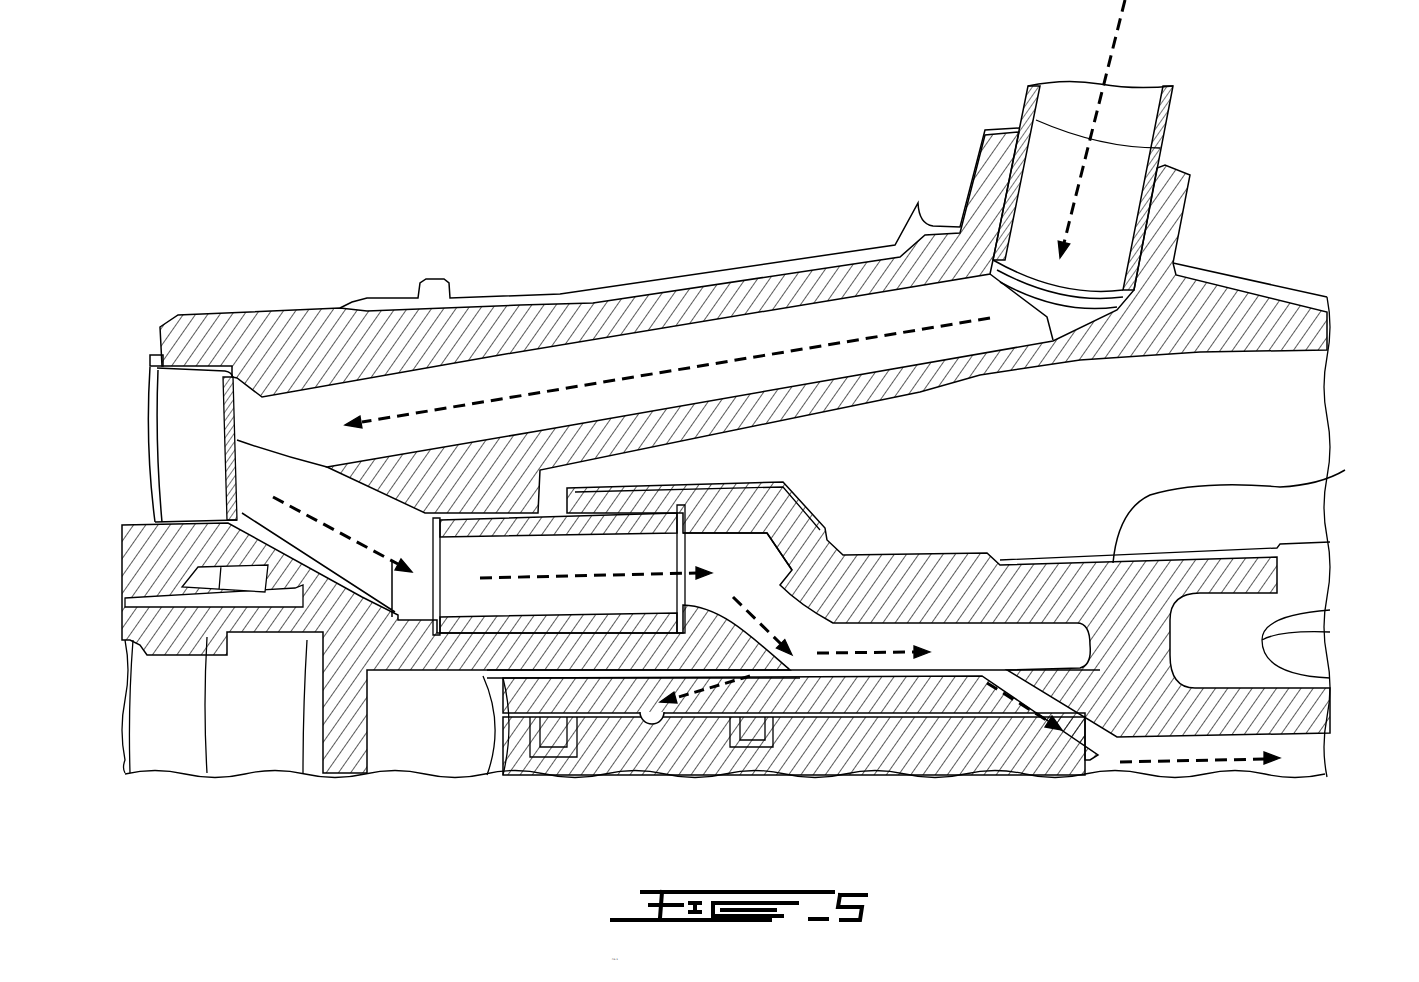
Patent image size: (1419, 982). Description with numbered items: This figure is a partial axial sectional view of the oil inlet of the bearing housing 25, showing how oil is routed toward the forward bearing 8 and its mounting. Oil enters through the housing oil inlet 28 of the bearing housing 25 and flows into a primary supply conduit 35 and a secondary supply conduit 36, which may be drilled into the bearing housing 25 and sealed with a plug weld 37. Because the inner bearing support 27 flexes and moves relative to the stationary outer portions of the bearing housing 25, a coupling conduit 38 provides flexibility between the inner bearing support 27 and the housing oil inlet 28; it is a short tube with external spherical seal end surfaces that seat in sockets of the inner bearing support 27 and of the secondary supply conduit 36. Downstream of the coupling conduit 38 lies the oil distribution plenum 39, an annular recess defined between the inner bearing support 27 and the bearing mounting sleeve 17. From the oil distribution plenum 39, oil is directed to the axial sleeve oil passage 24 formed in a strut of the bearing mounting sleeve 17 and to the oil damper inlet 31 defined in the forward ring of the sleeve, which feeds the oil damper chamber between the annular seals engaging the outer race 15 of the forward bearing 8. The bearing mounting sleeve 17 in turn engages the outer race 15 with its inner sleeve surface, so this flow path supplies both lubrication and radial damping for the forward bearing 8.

The forward bearing 8 is at (512, 793).
The outer race 15 is at (628, 748).
The bearing mounting sleeve 17 is at (877, 703).
The sleeve oil passage 24 is at (1210, 763).
The bearing housing 25 is at (1237, 277).
The inner bearing support 27 is at (1340, 476).
The housing oil inlet 28 is at (1168, 118).
The oil damper inlet 31 is at (680, 712).
The primary supply conduit 35 is at (673, 350).
The secondary supply conduit 36 is at (347, 513).
The plug weld 37 is at (223, 440).
The coupling conduit 38 is at (520, 510).
The oil distribution plenum 39 is at (967, 655).